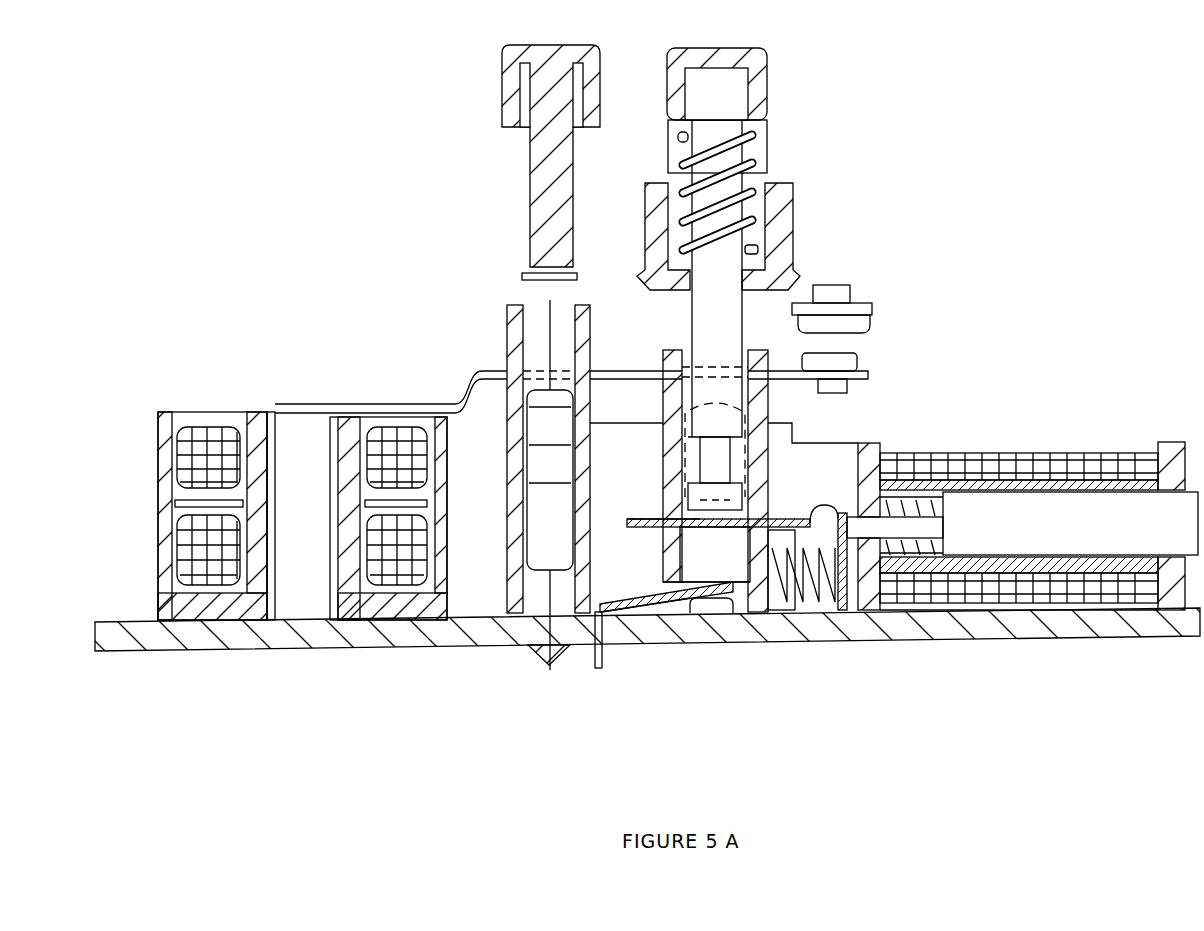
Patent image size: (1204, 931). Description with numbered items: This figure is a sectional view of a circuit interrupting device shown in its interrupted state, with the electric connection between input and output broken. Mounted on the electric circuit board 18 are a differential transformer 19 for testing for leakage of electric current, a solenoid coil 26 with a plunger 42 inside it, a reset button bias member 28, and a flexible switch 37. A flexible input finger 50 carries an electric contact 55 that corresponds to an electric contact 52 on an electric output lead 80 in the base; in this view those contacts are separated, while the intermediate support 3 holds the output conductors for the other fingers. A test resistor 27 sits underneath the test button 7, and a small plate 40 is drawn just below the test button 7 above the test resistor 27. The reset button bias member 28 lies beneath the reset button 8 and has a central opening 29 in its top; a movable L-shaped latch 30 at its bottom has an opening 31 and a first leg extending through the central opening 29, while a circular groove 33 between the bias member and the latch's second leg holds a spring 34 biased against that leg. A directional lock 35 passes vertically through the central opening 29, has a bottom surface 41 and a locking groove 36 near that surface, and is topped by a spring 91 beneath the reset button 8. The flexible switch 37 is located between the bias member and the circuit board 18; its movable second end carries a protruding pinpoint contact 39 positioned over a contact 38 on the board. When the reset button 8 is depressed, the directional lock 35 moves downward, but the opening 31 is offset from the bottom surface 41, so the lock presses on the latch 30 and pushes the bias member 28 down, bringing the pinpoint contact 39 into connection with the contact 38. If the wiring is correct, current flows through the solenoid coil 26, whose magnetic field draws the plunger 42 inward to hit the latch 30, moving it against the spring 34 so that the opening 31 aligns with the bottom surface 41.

The intermediate support 3 is at (787, 213).
The test button 7 is at (580, 47).
The reset button 8 is at (757, 50).
The electric circuit board 18 is at (960, 632).
The differential transformer 19 is at (217, 427).
The solenoid coil 26 is at (1020, 453).
The test resistor 27 is at (551, 300).
The reset button bias member 28 is at (705, 405).
The central opening 29 is at (747, 352).
The L-shaped latch 30 is at (805, 516).
The opening 31 is at (747, 530).
The circular groove 33 is at (750, 614).
The spring 34 is at (800, 614).
The directional lock 35 is at (733, 314).
The locking groove 36 is at (688, 476).
The flexible switch 37 is at (625, 613).
The contact 38 is at (722, 607).
The pinpoint contact 39 is at (642, 608).
The plate 40 is at (524, 273).
The bottom surface 41 is at (698, 527).
The plunger 42 is at (1072, 540).
The flexible input finger 50 is at (480, 372).
The electric contact 52 is at (868, 328).
The electric contact 55 is at (868, 374).
The electric output lead 80 is at (863, 308).
The spring 91 is at (773, 170).